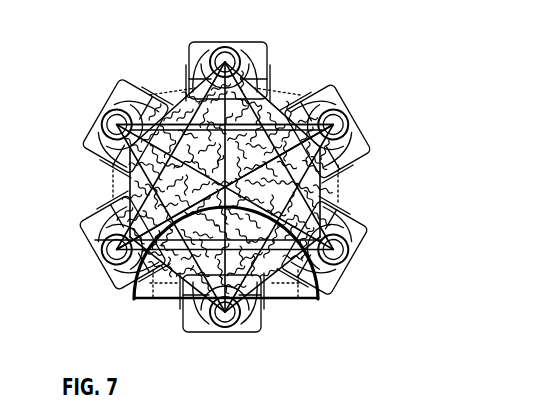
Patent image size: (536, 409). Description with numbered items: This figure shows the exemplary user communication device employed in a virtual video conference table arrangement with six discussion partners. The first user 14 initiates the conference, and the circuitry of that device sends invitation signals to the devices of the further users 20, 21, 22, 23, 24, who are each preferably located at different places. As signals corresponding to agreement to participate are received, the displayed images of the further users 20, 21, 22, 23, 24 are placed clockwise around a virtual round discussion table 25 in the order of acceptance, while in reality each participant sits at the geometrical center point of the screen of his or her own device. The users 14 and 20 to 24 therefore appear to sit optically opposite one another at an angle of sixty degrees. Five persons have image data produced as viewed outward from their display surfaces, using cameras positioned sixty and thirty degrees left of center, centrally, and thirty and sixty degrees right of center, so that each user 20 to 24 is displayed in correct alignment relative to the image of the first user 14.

The first user 14 is at (251, 318).
The user 20 is at (98, 239).
The user 21 is at (122, 88).
The user 22 is at (262, 56).
The user 23 is at (332, 98).
The user 24 is at (361, 224).
The virtual round discussion table 25 is at (283, 104).